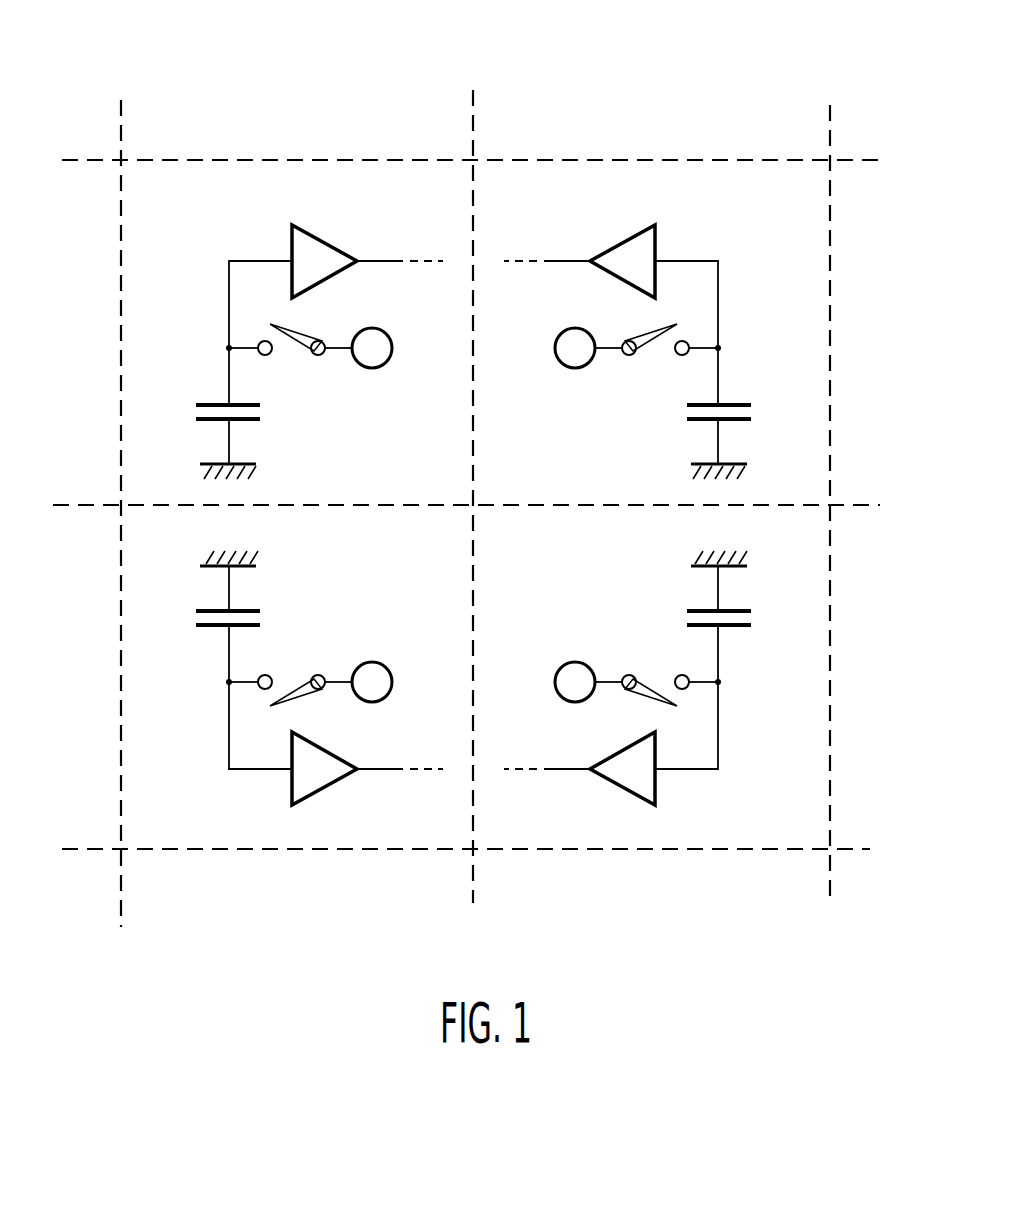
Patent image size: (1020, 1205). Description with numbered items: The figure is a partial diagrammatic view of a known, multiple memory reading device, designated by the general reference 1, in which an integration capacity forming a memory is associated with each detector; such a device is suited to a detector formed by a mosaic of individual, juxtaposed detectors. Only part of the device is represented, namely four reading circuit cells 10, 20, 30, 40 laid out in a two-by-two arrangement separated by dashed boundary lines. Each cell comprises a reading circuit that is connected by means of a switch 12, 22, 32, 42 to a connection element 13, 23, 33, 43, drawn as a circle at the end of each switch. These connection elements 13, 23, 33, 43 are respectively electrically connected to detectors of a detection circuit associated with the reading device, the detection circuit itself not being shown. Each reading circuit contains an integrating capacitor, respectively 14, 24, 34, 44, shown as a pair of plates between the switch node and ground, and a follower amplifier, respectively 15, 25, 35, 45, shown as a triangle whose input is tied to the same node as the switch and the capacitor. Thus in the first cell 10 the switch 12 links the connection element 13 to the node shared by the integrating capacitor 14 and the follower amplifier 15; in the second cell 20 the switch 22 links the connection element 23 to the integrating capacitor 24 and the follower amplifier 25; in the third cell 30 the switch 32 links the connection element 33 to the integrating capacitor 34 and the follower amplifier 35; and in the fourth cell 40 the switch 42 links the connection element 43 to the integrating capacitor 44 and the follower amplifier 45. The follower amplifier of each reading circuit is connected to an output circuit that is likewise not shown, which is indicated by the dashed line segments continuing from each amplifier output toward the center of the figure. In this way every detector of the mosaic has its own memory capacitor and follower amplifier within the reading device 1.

The reading device 1 is at (586, 80).
The reading circuit cell 10 is at (296, 278).
The reading circuit cell 20 is at (654, 277).
The reading circuit cell 30 is at (655, 735).
The reading circuit cell 40 is at (295, 738).
The switch 12 is at (285, 351).
The connection element 13 is at (393, 357).
The integrating capacitor 14 is at (193, 410).
The follower amplifier 15 is at (325, 246).
The switch 22 is at (658, 349).
The connection element 23 is at (556, 363).
The integrating capacitor 24 is at (755, 411).
The follower amplifier 25 is at (622, 246).
The switch 32 is at (650, 657).
The connection element 33 is at (564, 660).
The integrating capacitor 34 is at (757, 616).
The follower amplifier 35 is at (620, 790).
The switch 42 is at (297, 660).
The connection element 43 is at (390, 661).
The integrating capacitor 44 is at (195, 619).
The follower amplifier 45 is at (331, 784).